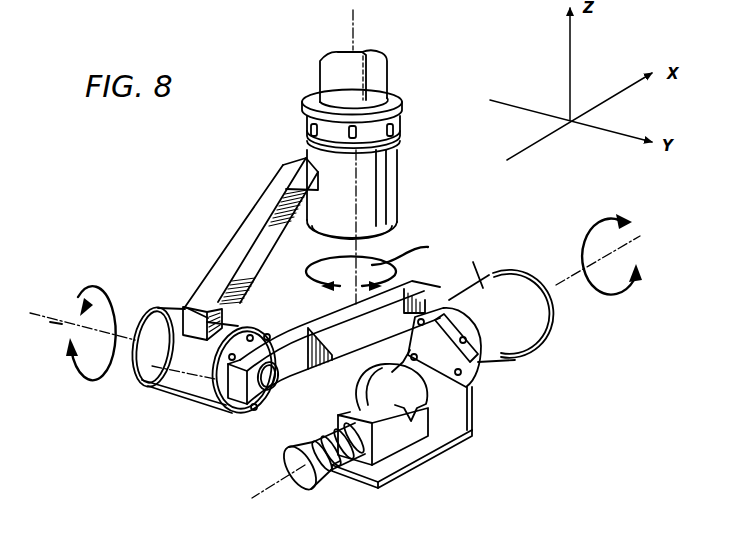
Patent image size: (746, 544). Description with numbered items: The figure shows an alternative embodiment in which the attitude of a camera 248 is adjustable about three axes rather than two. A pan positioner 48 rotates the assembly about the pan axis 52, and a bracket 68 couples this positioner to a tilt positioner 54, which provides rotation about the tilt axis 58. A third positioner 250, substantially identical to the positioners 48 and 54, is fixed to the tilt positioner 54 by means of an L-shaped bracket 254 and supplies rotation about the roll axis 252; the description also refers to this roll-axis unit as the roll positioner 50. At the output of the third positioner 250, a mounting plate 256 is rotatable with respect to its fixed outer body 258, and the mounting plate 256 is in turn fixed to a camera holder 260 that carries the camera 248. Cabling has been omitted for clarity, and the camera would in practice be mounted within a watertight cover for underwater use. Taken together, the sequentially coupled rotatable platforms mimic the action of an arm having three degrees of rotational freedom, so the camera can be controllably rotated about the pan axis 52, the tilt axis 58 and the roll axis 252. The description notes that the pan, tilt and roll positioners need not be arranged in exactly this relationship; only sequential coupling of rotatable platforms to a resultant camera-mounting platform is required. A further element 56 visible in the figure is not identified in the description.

The pan positioner 48 is at (420, 152).
The roll positioner 50 is at (309, 273).
The pan axis 52 is at (411, 252).
The tilt positioner 54 is at (166, 402).
The rotation about Y axis 56 is at (117, 307).
The tilt axis 58 is at (60, 323).
The bracket 68 is at (224, 266).
The camera 248 is at (397, 437).
The third positioner 250 is at (541, 352).
The roll axis 252 is at (626, 241).
The L-shaped bracket 254 is at (318, 318).
The mounting plate 256 is at (507, 363).
The fixed outer body 258 is at (483, 288).
The camera holder 260 is at (455, 408).